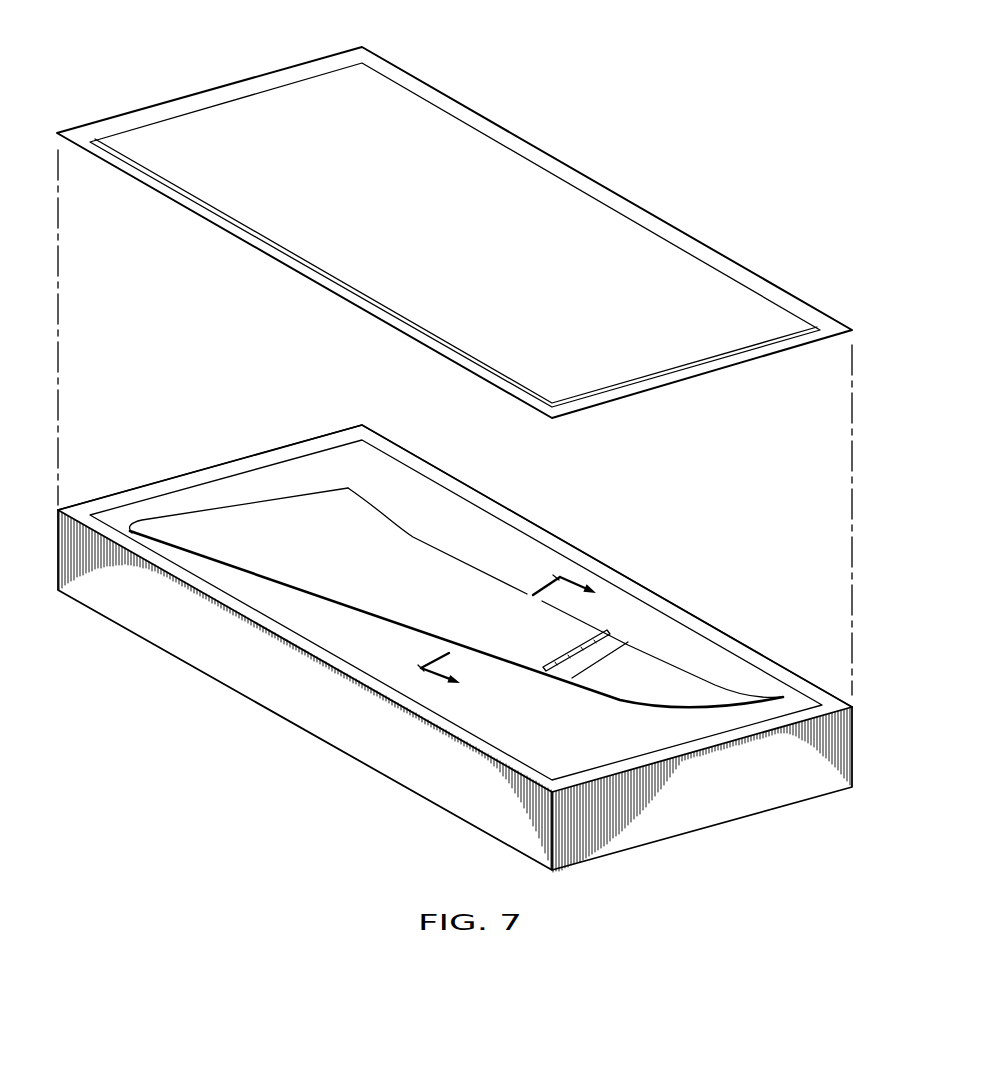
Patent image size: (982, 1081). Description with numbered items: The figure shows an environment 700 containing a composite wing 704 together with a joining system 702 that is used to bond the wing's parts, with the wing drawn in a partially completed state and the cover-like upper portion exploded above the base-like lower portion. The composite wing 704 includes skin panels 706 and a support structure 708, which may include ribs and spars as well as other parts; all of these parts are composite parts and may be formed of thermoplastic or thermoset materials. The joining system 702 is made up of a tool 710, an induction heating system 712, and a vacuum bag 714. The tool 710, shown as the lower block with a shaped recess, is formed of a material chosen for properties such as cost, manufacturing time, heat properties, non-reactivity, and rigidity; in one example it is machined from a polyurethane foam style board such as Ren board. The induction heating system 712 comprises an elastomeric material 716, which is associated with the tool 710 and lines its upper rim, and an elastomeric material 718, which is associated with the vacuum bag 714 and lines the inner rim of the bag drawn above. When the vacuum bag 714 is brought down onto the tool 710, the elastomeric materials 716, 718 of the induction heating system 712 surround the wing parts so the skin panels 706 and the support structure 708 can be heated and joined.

The environment 700 is at (665, 82).
The joining system 702 is at (222, 705).
The composite wing 704 is at (385, 500).
The skin panels 706 is at (452, 565).
The support structure 708 is at (558, 661).
The tool 710 is at (323, 740).
The induction heating system 712 is at (268, 460).
The vacuum bag 714 is at (331, 62).
The elastomeric material 716 is at (343, 453).
The elastomeric material 718 is at (255, 105).